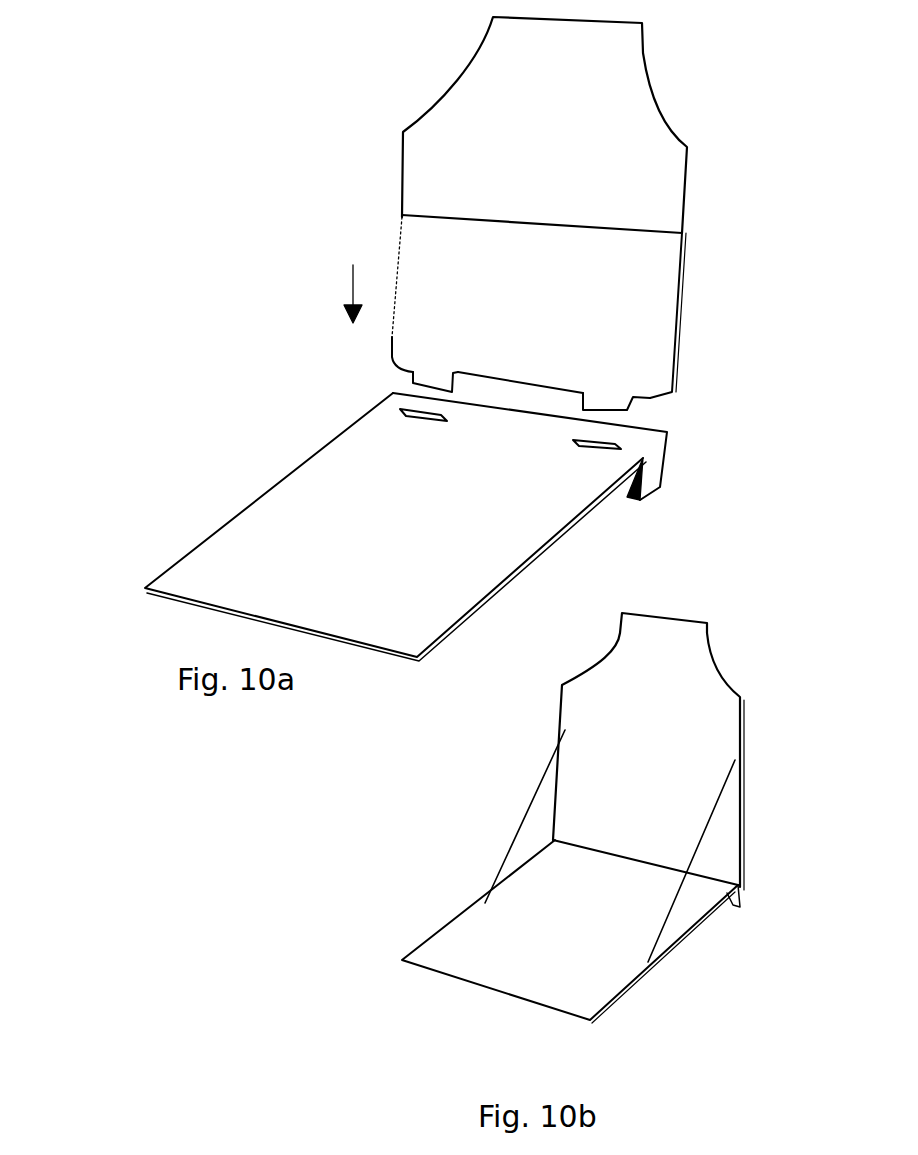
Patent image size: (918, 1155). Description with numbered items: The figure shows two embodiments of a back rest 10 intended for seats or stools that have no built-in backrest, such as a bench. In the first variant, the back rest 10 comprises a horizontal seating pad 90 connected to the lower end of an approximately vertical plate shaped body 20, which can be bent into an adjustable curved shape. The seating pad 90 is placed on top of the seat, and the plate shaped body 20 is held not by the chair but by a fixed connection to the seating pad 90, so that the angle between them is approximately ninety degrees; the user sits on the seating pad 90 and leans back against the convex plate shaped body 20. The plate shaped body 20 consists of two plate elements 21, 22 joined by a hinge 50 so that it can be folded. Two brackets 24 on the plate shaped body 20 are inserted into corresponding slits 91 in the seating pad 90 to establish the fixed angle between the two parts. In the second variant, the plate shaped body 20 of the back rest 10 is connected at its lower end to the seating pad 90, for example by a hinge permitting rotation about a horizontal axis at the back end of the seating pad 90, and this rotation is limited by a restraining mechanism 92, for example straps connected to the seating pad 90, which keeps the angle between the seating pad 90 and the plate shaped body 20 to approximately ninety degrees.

In FIG. 10A, the back rest 10 is at (158, 177).
In FIG. 10B, the back rest 10 is at (425, 843).
In FIG. 10A, the plate shaped body 20 is at (390, 175).
In FIG. 10B, the plate shaped body 20 is at (600, 722).
In FIG. 10A, the plate element 21 is at (650, 322).
In FIG. 10A, the plate element 22 is at (637, 117).
In FIG. 10A, the bracket 24 is at (413, 380).
In FIG. 10A, the hinge 50 is at (698, 233).
In FIG. 10A, the seating pad 90 is at (322, 487).
In FIG. 10B, the seating pad 90 is at (577, 987).
In FIG. 10A, the slit 91 is at (405, 417).
In FIG. 10B, the restraining mechanism 92 is at (523, 807).